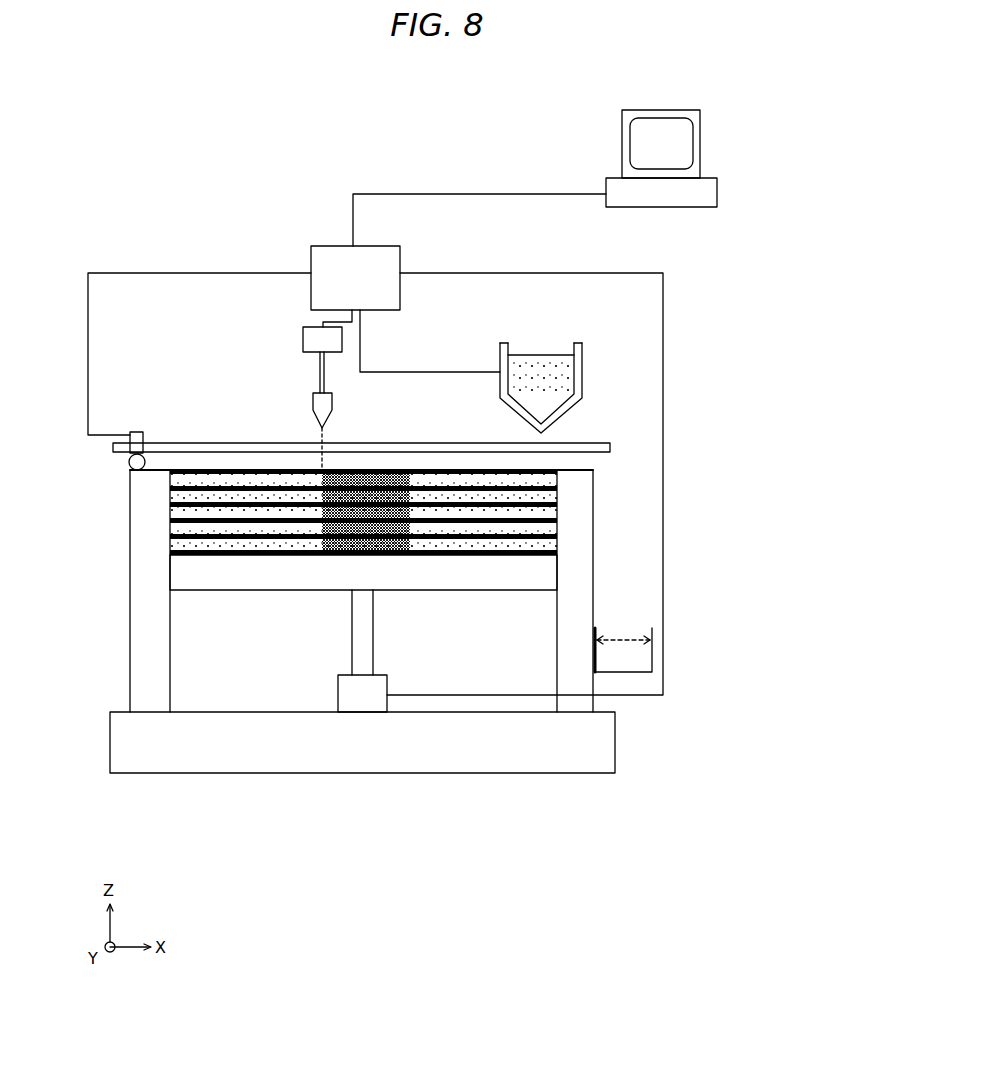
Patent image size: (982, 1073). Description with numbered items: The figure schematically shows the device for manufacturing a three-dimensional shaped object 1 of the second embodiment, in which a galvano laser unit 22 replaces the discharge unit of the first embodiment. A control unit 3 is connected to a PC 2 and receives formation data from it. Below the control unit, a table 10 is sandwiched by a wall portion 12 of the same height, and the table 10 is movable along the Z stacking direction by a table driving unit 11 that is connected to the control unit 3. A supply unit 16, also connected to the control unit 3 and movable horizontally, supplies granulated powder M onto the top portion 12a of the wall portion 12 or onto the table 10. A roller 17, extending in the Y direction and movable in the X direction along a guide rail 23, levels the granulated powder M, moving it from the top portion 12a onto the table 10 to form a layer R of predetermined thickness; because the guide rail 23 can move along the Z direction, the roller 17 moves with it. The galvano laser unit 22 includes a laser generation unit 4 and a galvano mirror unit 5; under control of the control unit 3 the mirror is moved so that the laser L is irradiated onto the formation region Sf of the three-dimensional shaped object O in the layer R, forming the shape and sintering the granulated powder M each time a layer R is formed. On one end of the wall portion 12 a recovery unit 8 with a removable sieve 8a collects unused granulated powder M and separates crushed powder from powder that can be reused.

The device for manufacturing a three-dimensional shaped object 1 is at (740, 297).
The PC 2 is at (732, 118).
The control unit 3 is at (332, 246).
The laser generation unit 4 is at (303, 338).
The galvano mirror unit 5 is at (316, 402).
The recovery unit 8 is at (652, 650).
The sieve 8a is at (625, 640).
The table 10 is at (248, 590).
The table driving unit 11 is at (338, 690).
The wall portion 12 is at (130, 558).
The top portion 12a is at (157, 464).
The supply unit 16 is at (582, 372).
The roller 17 is at (125, 458).
The galvano laser unit 22 is at (260, 366).
The guide rail 23 is at (600, 444).
The laser L is at (334, 445).
The granulated powder M is at (533, 363).
The three-dimensional shaped object O is at (383, 553).
The layer R is at (553, 557).
The formation region Sf is at (367, 462).